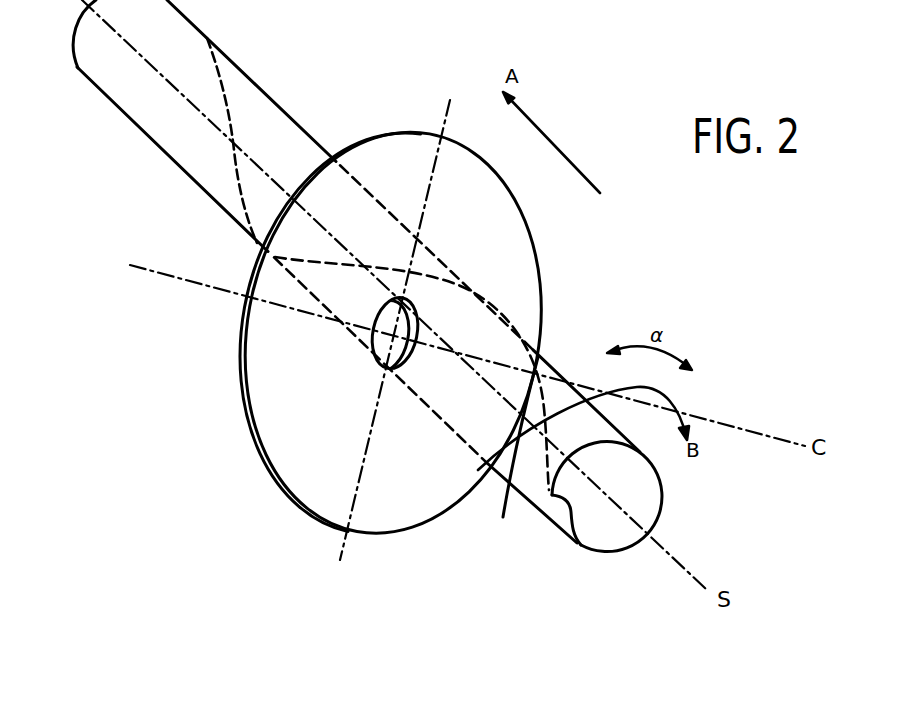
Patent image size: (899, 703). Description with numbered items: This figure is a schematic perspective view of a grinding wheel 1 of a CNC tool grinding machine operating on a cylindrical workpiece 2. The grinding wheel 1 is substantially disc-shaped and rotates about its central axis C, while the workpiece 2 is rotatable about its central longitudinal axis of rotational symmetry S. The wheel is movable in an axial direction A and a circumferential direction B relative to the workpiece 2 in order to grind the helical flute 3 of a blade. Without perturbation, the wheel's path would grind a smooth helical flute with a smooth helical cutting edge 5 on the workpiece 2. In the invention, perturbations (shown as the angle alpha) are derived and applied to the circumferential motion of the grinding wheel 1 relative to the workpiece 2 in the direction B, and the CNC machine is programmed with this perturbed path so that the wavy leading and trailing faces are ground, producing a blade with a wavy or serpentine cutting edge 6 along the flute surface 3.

The grinding wheel 1 is at (418, 141).
The cylindrical workpiece 2 is at (263, 93).
The flute surface 3 is at (561, 518).
The cutting edge 5 is at (228, 192).
The wavy cutting edge 6 is at (560, 373).